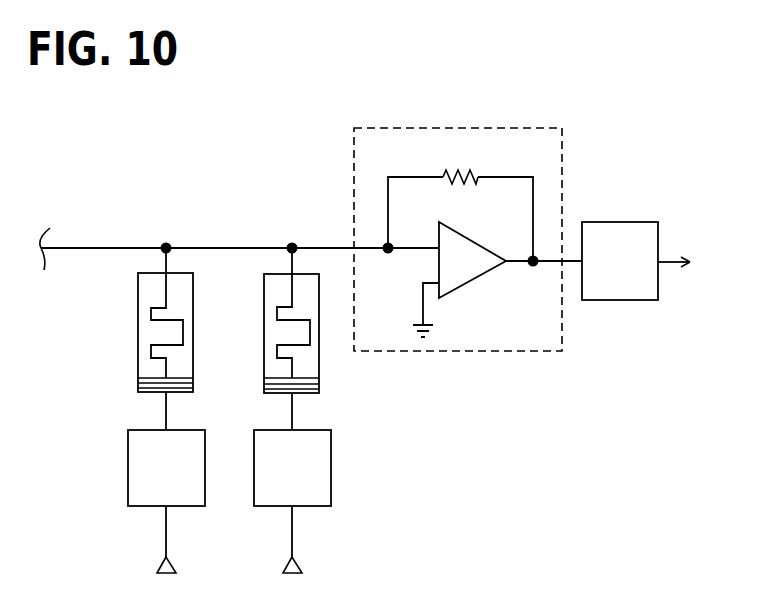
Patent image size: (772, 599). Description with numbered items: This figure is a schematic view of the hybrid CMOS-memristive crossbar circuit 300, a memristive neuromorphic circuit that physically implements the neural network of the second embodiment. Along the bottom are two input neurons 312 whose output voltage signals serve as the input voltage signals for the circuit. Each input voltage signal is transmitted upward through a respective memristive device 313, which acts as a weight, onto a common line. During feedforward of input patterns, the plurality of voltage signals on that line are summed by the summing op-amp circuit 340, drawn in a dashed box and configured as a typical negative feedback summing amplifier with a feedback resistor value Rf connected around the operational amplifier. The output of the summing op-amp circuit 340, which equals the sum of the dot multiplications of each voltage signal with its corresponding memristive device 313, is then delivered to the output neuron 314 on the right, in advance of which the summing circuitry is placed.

The crossbar circuit 300 is at (392, 350).
The input neuron 312 is at (138, 506).
The memristive device 313 is at (137, 375).
The output neuron 314 is at (633, 300).
The summing op-amp circuit 340 is at (512, 351).